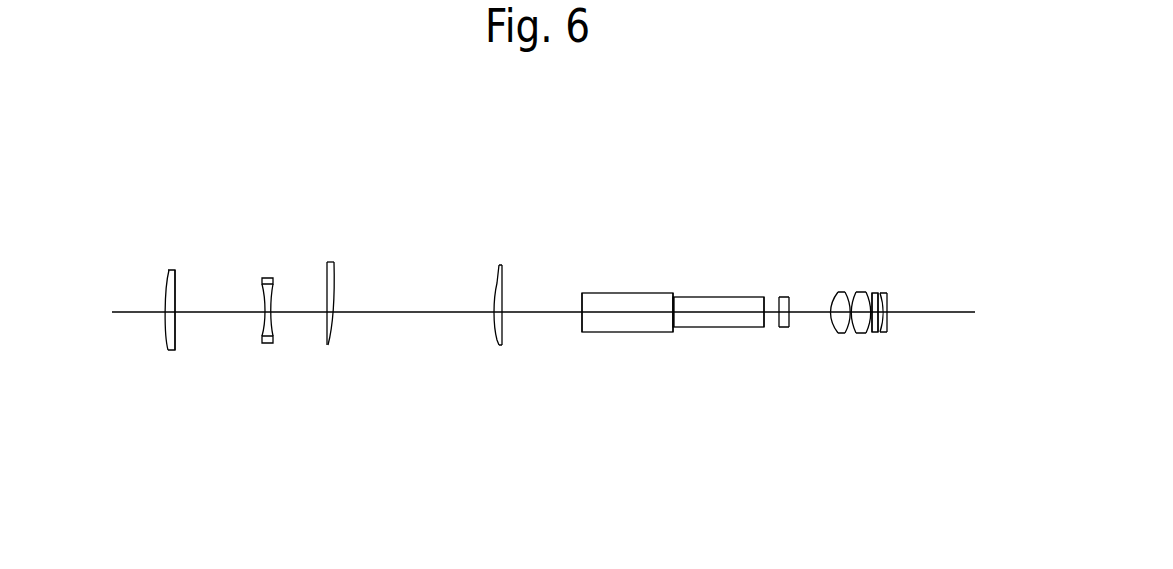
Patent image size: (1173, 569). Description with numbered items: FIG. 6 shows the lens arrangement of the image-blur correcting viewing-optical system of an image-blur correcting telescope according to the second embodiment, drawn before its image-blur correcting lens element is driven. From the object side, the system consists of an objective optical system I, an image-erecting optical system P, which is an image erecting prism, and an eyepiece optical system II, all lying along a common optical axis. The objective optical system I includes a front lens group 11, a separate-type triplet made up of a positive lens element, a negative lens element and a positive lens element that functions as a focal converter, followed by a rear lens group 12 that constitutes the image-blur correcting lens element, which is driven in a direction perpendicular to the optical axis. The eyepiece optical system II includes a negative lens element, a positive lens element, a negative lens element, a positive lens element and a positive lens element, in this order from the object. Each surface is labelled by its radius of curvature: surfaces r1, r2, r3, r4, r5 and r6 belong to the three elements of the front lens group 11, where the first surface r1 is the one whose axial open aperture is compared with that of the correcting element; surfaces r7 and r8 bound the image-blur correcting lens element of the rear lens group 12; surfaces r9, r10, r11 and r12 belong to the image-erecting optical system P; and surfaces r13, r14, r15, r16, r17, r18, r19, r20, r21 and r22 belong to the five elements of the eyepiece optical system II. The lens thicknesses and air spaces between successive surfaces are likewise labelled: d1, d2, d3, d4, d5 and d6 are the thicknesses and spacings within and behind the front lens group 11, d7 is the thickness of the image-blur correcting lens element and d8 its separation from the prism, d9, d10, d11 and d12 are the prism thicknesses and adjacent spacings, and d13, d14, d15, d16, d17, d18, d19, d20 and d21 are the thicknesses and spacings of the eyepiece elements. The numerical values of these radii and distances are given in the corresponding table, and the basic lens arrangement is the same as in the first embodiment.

The objective optical system I is at (547, 155).
The image-erecting optical system P is at (770, 155).
The eyepiece optical system II is at (983, 155).
The front lens group 11 is at (368, 462).
The rear lens group 12 is at (562, 462).
The radius of curvature r1 is at (169, 270).
The radius of curvature r2 is at (175, 270).
The radius of curvature r3 is at (262, 278).
The radius of curvature r4 is at (273, 278).
The radius of curvature r5 is at (327, 262).
The radius of curvature r6 is at (334, 262).
The radius of curvature r7 is at (499, 265).
The radius of curvature r8 is at (502, 265).
The radius of curvature r9 is at (582, 293).
The radius of curvature r10 is at (672, 293).
The radius of curvature r11 is at (674, 297).
The radius of curvature r12 is at (764, 297).
The radius of curvature r13 is at (779, 297).
The radius of curvature r14 is at (789, 297).
The radius of curvature r15 is at (838, 292).
The radius of curvature r16 is at (845, 292).
The radius of curvature r17 is at (856, 292).
The radius of curvature r18 is at (866, 292).
The radius of curvature r19 is at (872, 293).
The radius of curvature r20 is at (878, 293).
The radius of curvature r21 is at (882, 293).
The radius of curvature r22 is at (888, 300).
The lens thickness d1 is at (168, 350).
The space between lens surfaces d2 is at (216, 313).
The lens thickness d3 is at (263, 343).
The space between lens surfaces d4 is at (295, 313).
The lens thickness d5 is at (331, 345).
The space between lens surfaces d6 is at (395, 313).
The lens thickness d7 is at (502, 345).
The space between lens surfaces d8 is at (543, 313).
The lens thickness d9 is at (615, 313).
The space between lens surfaces d10 is at (676, 313).
The lens thickness d11 is at (715, 313).
The space between lens surfaces d12 is at (770, 313).
The lens thickness d13 is at (788, 328).
The space between lens surfaces d14 is at (807, 313).
The lens thickness d15 is at (838, 334).
The space between lens surfaces d16 is at (847, 334).
The lens thickness d17 is at (855, 334).
The space between lens surfaces d18 is at (868, 334).
The lens thickness d19 is at (874, 334).
The space between lens surfaces d20 is at (880, 334).
The lens thickness d21 is at (887, 330).